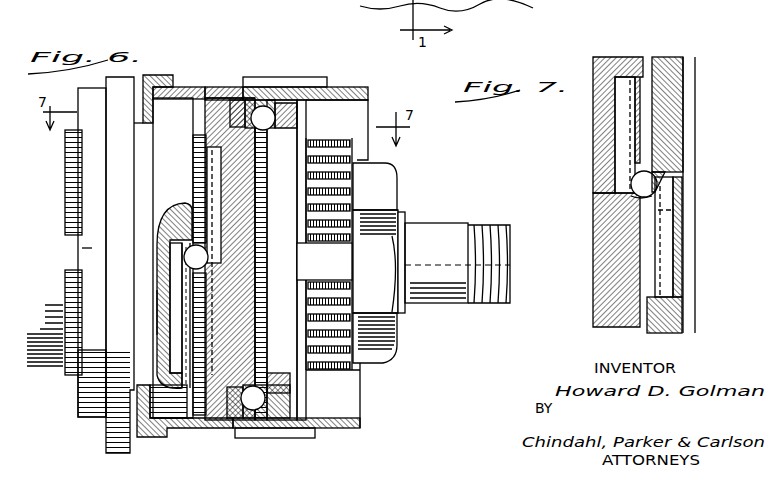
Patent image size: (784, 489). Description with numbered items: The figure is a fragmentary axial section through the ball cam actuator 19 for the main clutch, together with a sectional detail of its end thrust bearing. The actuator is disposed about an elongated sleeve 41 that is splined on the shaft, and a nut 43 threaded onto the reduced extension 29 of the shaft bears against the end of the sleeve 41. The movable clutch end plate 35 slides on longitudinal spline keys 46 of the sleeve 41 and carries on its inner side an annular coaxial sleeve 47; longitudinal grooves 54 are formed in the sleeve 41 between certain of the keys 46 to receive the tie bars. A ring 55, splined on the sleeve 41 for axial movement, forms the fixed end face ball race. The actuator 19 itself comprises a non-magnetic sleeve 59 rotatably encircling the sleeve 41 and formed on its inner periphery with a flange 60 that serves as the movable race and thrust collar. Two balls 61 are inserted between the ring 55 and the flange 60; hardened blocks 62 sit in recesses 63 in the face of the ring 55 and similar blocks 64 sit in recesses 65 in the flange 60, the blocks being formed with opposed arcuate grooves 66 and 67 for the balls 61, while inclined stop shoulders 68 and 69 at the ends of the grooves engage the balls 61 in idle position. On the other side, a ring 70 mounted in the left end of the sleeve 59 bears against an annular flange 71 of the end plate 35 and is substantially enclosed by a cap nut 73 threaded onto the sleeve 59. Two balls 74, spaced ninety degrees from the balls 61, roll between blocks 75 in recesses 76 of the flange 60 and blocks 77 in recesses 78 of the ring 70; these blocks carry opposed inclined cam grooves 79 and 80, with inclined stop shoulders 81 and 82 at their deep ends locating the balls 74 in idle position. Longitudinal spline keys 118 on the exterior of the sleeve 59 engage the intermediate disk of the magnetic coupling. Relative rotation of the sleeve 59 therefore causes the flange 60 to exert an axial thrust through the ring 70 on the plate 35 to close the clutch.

In FIG. 6, the ball cam actuator 19 is at (216, 68).
In FIG. 6, the reduced extension of the shaft 29 is at (430, 238).
In FIG. 6, the end plate 35 is at (100, 415).
In FIG. 6, the sleeve 41 is at (47, 343).
In FIG. 6, the nut 43 is at (386, 348).
In FIG. 6, the spline keys 46 is at (68, 198).
In FIG. 6, the sleeve 47 is at (88, 247).
In FIG. 6, the grooves 54 is at (400, 212).
In FIG. 6, the ring 55 is at (300, 392).
In FIG. 7, the ring 55 is at (673, 124).
In FIG. 6, the sleeve 59 is at (282, 100).
In FIG. 6, the flange 60 is at (212, 100).
In FIG. 7, the flange 60 is at (600, 261).
In FIG. 6, the balls 61 is at (258, 106).
In FIG. 7, the balls 61 is at (652, 188).
In FIG. 6, the blocks 62 is at (290, 92).
In FIG. 7, the blocks 62 is at (666, 240).
In FIG. 6, the recesses 63 is at (283, 122).
In FIG. 7, the recesses 63 is at (677, 272).
In FIG. 6, the blocks 64 is at (236, 100).
In FIG. 7, the blocks 64 is at (612, 128).
In FIG. 6, the recesses 65 is at (229, 88).
In FIG. 7, the recesses 65 is at (618, 147).
In FIG. 6, the grooves 66 is at (262, 173).
In FIG. 7, the grooves 66 is at (673, 210).
In FIG. 6, the grooves 67 is at (283, 126).
In FIG. 7, the grooves 67 is at (628, 164).
In FIG. 7, the stop shoulder 68 is at (660, 166).
In FIG. 7, the stop shoulder 69 is at (640, 197).
In FIG. 6, the ring 70 is at (176, 105).
In FIG. 6, the flange 71 is at (106, 152).
In FIG. 6, the cap nut 73 is at (153, 78).
In FIG. 6, the balls 74 is at (220, 207).
In FIG. 6, the blocks 75 is at (196, 168).
In FIG. 6, the recesses 76 is at (223, 193).
In FIG. 6, the blocks 77 is at (176, 287).
In FIG. 6, the recesses 78 is at (158, 305).
In FIG. 6, the cam grooves 79 is at (214, 210).
In FIG. 6, the cam grooves 80 is at (175, 247).
In FIG. 6, the stop shoulder 81 is at (264, 283).
In FIG. 6, the stop shoulder 82 is at (193, 240).
In FIG. 6, the spline keys 118 is at (300, 78).